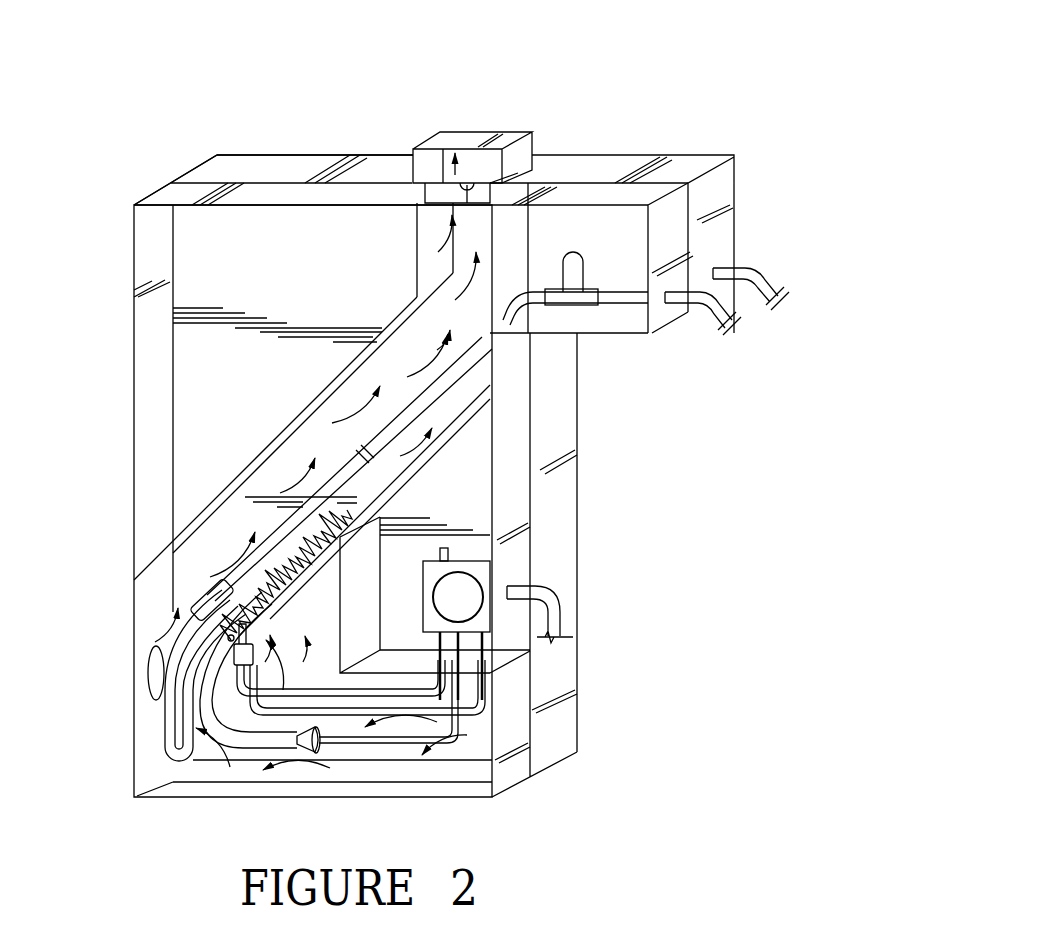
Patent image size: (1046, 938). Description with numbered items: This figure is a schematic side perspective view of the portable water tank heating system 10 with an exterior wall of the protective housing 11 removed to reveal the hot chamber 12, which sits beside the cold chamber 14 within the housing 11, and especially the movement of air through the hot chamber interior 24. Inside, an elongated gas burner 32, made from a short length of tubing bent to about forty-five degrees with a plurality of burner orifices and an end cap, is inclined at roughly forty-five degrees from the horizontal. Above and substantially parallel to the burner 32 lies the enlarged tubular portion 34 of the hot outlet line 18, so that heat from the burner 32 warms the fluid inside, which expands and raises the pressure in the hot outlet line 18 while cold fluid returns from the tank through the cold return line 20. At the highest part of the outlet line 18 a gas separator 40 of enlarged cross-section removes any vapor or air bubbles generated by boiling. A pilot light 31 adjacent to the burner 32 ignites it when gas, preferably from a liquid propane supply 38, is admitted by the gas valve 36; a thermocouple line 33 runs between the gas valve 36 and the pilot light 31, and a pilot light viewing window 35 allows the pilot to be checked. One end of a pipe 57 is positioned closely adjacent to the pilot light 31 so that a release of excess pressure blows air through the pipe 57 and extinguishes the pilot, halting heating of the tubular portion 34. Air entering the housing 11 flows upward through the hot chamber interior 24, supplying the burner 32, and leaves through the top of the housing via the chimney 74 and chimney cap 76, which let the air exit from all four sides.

The system 10 is at (758, 128).
The protective housing 11 is at (570, 478).
The hot chamber 12 is at (391, 194).
The cold chamber 14 is at (273, 180).
The hot outlet line 18 is at (723, 318).
The cold return line 20 is at (765, 283).
The hot chamber interior 24 is at (618, 245).
The pilot light 31 is at (257, 628).
The gas burner 32 is at (290, 595).
The thermocouple line 33 is at (312, 695).
The enlarged tubular portion 34 is at (343, 477).
The pilot light viewing window 35 is at (148, 668).
The gas valve 36 is at (462, 598).
The liquid propane supply 38 is at (555, 622).
The gas separator 40 is at (588, 299).
The pipe 57 is at (185, 690).
The chimney 74 is at (447, 192).
The chimney cap 76 is at (470, 128).